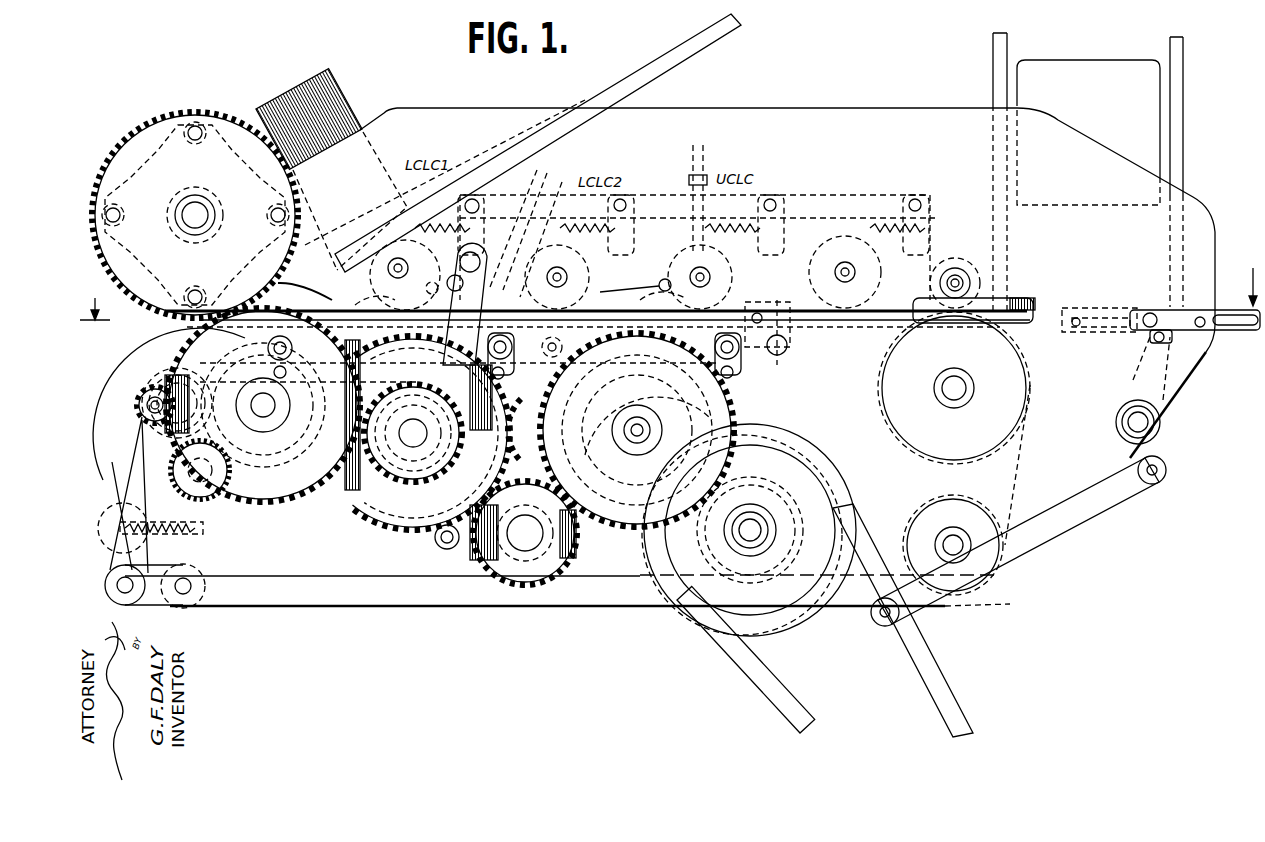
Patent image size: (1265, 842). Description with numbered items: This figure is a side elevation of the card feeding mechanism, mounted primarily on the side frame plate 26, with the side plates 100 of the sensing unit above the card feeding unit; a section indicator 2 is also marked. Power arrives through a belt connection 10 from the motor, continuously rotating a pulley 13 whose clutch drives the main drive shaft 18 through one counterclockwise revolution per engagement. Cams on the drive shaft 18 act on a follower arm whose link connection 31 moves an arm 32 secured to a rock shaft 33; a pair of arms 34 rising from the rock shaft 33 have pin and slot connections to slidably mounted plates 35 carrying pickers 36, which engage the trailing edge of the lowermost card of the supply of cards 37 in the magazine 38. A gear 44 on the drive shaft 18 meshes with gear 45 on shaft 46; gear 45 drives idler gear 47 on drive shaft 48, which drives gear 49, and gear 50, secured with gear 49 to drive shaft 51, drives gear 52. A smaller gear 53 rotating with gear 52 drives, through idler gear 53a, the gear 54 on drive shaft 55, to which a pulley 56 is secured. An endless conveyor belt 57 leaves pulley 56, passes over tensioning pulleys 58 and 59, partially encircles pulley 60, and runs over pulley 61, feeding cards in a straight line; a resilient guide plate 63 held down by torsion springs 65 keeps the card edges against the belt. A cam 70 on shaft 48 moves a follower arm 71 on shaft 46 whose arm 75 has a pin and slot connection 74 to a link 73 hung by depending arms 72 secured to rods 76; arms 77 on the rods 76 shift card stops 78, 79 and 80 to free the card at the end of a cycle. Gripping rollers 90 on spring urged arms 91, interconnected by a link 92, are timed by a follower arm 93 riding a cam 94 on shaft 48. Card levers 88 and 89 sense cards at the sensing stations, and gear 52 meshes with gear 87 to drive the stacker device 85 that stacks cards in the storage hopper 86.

The section line 2 is at (668, 304).
The belt connection 10 is at (762, 687).
The pulley 13 is at (795, 622).
The main drive shaft 18 is at (775, 520).
The side frame plate 26 is at (913, 489).
The link connection 31 is at (1055, 530).
The arm 32 is at (1162, 458).
The rock shaft 33 is at (1118, 425).
The arms 34 is at (1128, 379).
The slidably mounted plate 35 is at (1076, 337).
The picker 36 is at (1205, 312).
The supply of cards 37 is at (1030, 298).
The magazine 38 is at (1148, 200).
The gear 44 is at (778, 520).
The gear 45 is at (737, 411).
The shaft 46 is at (637, 445).
The idler gear 47 is at (512, 560).
The drive shaft 48 is at (500, 575).
The gear 49 is at (395, 517).
The gear 50 is at (385, 470).
The drive shaft 51 is at (413, 440).
The gear 52 is at (288, 490).
The smaller gear 53 is at (252, 470).
The idler gear 53a is at (208, 500).
The gear 54 is at (142, 395).
The drive shaft 55 is at (147, 410).
The pulley 56 is at (108, 392).
The endless conveyor belt 57 is at (120, 480).
The tensioning pulley 58 is at (116, 545).
The tensioning pulley 59 is at (165, 602).
The pulley 60 is at (975, 598).
The pulley 61 is at (882, 356).
The resilient guide plate 63 is at (868, 312).
The torsion spring 65 is at (645, 292).
The cam 70 is at (465, 562).
The follower arm 71 is at (522, 418).
The depending arms 72 is at (481, 290).
The link 73 is at (513, 356).
The pin and slot connection 74 is at (625, 370).
The arm 75 is at (618, 400).
The rod 76 is at (715, 350).
The arm 77 is at (757, 314).
The card stop 78 is at (778, 334).
The card stop 79 is at (558, 350).
The card stop 80 is at (313, 300).
The stacker device 85 is at (137, 152).
The storage hopper 86 is at (352, 100).
The gear 87 is at (228, 130).
The card lever 88 is at (635, 277).
The card lever 89 is at (426, 292).
The gripping roller 90 is at (370, 272).
The spring urged arm 91 is at (466, 242).
The link 92 is at (836, 194).
The follower arm 93 is at (413, 433).
The cam 94 is at (475, 590).
The side plate 100 is at (787, 118).